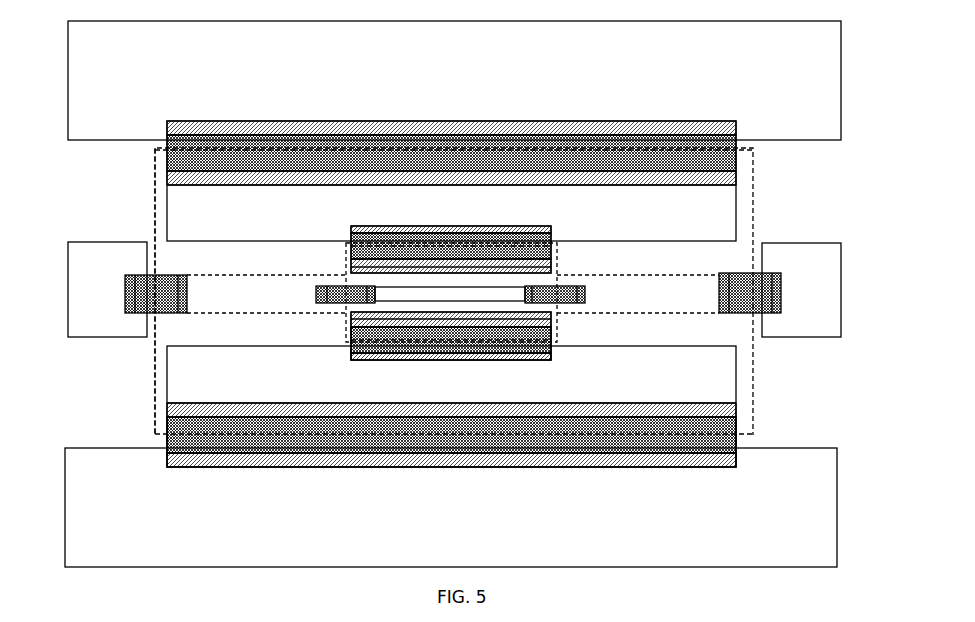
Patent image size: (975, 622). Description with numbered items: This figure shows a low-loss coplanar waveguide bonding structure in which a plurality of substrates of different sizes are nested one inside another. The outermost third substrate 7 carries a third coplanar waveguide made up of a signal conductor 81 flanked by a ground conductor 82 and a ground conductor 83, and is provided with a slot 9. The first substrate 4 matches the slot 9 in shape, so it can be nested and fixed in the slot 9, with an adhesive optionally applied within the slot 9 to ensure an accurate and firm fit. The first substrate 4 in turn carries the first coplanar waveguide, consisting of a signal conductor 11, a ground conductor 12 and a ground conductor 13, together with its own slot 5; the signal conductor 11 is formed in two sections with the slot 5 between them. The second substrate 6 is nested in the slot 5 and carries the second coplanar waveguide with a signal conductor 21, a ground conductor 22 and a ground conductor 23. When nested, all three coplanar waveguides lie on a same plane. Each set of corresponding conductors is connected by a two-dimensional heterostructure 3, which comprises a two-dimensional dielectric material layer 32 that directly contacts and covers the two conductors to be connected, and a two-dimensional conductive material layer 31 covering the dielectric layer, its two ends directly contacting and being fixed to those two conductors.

The ground conductor 82 is at (805, 101).
The ground conductor 83 is at (800, 468).
The signal conductor 81 is at (805, 290).
The ground conductor 12 is at (733, 220).
The ground conductor 13 is at (722, 376).
The signal conductor 11 is at (693, 280).
The slot 9 is at (760, 185).
The third substrate 7 is at (120, 172).
The first substrate 4 is at (190, 248).
The second substrate 6 is at (368, 282).
The slot 5 is at (557, 258).
The ground conductor 22 is at (560, 268).
The signal conductor 21 is at (560, 318).
The ground conductor 23 is at (560, 322).
The two-dimensional dielectric material layer 32 is at (372, 357).
The two-dimensional conductive material layer 31 is at (415, 352).
The two-dimensional heterostructure 3 is at (322, 504).